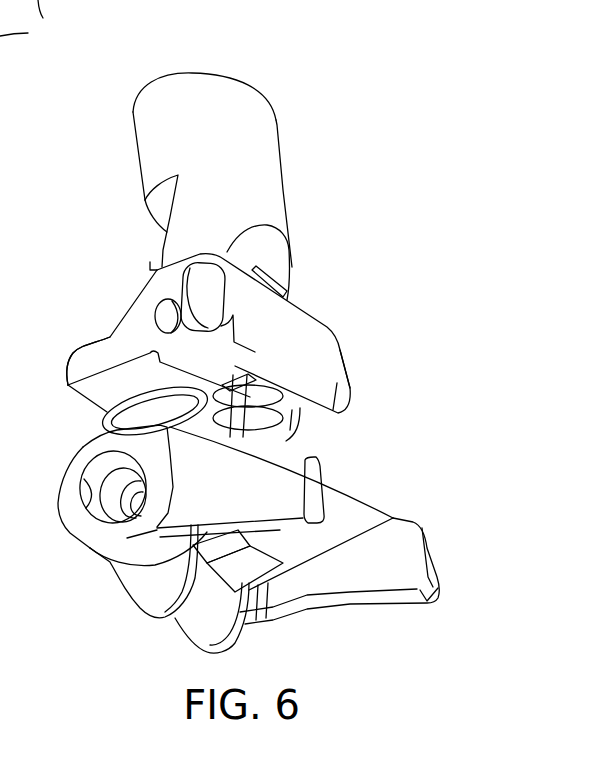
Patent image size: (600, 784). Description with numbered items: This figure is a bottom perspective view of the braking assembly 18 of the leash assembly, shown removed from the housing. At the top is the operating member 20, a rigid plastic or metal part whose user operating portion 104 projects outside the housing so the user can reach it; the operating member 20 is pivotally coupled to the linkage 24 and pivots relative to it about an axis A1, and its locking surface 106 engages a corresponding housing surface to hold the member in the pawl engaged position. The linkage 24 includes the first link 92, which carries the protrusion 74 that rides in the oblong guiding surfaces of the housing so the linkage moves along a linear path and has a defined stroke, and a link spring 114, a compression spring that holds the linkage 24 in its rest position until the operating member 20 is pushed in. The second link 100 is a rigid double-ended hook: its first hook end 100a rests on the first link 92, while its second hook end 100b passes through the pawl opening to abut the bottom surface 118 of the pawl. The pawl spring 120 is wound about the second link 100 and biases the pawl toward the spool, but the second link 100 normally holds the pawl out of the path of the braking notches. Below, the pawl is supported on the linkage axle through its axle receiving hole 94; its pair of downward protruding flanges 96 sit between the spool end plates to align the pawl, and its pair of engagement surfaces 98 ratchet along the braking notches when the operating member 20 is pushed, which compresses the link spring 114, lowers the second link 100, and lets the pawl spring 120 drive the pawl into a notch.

The braking assembly 18 is at (369, 201).
The operating member 20 is at (284, 152).
The linkage 24 is at (84, 332).
The protrusion 74 is at (198, 270).
The first link 92 is at (66, 357).
The axle receiving hole 94 is at (80, 507).
The flanges 96 is at (143, 618).
The engagement surfaces 98 is at (446, 632).
The second link 100 is at (300, 432).
The first hook end 100a is at (274, 280).
The second hook end 100b is at (264, 600).
The user operating portion 104 is at (180, 72).
The locking surface 106 is at (150, 263).
The link spring 114 is at (102, 418).
The bottom surface 118 is at (225, 542).
The pawl spring 120 is at (283, 382).
The axis A1 is at (166, 314).